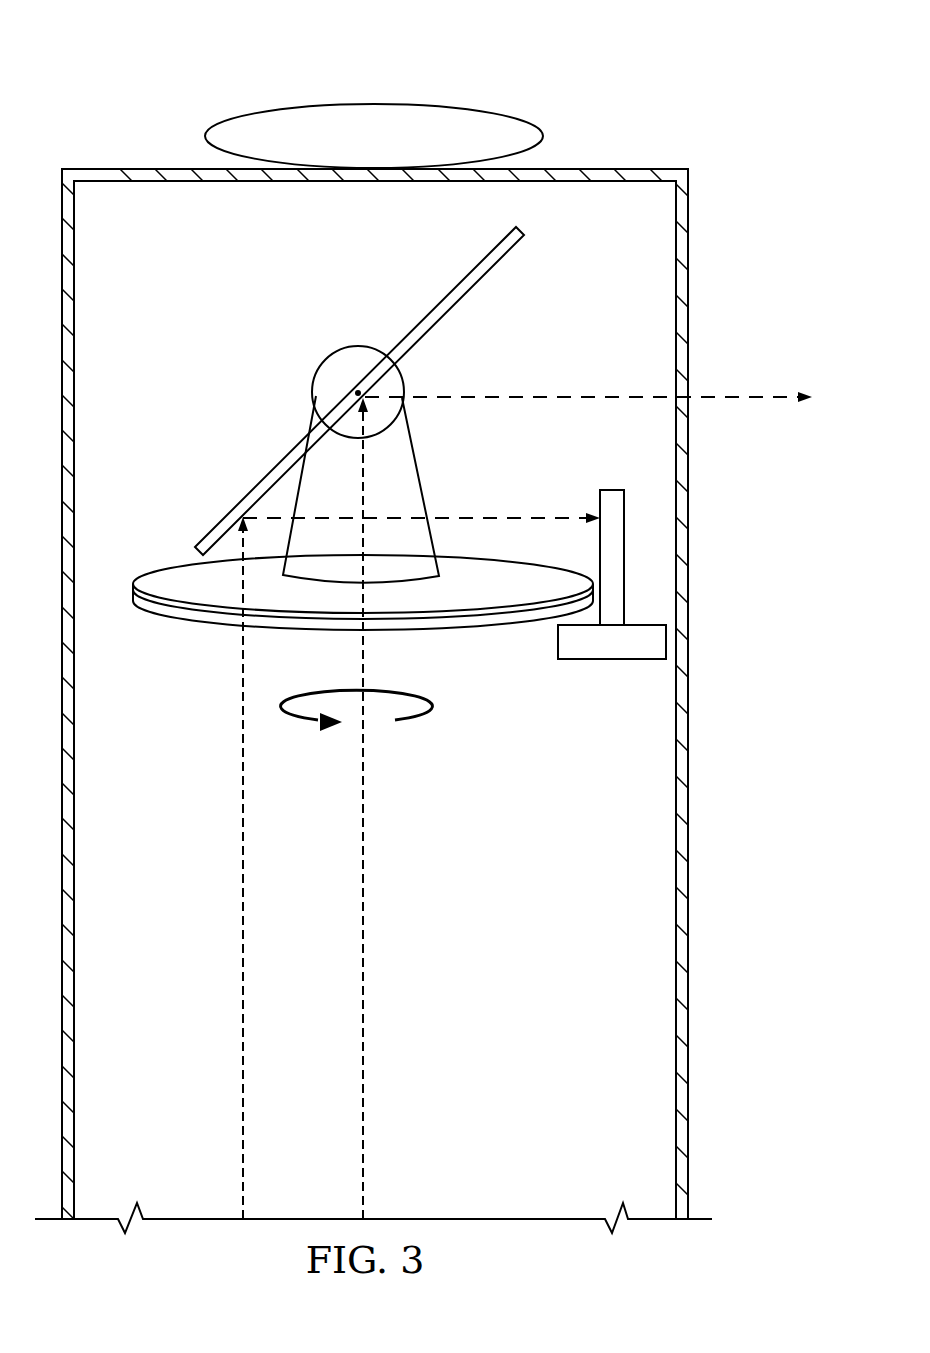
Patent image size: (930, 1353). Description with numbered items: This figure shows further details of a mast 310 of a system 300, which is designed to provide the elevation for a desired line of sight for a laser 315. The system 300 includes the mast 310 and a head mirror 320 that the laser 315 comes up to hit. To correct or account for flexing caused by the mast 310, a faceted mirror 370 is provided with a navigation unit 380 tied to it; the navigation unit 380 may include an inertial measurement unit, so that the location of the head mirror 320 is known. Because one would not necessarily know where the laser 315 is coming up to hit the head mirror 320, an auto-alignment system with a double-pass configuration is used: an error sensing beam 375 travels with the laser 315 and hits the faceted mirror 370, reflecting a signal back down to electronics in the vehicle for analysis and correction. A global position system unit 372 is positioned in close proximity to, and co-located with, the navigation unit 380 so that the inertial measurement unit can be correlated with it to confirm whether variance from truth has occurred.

The system 300 is at (143, 68).
The mast 310 is at (689, 713).
The laser 315 is at (553, 393).
The head mirror 320 is at (447, 298).
The faceted mirror 370 is at (612, 490).
The global position system (GPS) unit 372 is at (373, 103).
The error sensing beam 375 is at (243, 886).
The navigation unit 380 is at (612, 659).